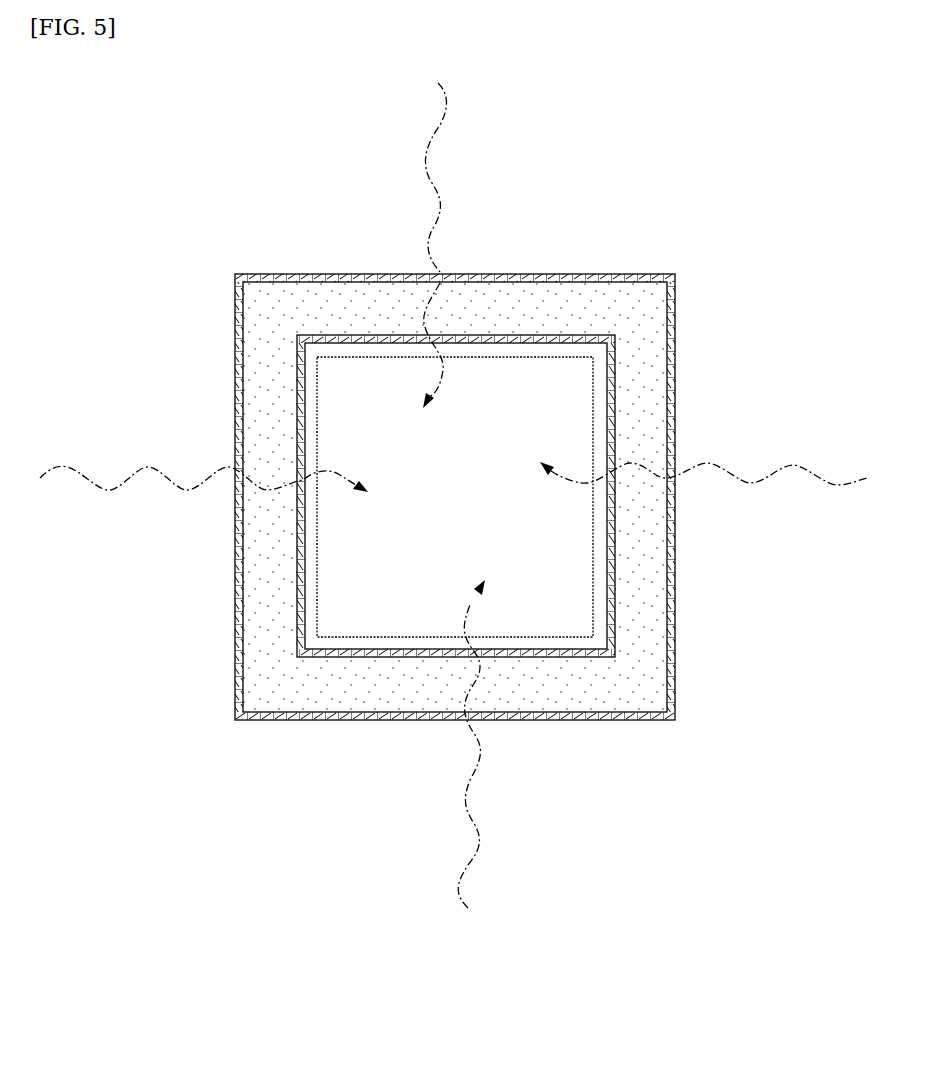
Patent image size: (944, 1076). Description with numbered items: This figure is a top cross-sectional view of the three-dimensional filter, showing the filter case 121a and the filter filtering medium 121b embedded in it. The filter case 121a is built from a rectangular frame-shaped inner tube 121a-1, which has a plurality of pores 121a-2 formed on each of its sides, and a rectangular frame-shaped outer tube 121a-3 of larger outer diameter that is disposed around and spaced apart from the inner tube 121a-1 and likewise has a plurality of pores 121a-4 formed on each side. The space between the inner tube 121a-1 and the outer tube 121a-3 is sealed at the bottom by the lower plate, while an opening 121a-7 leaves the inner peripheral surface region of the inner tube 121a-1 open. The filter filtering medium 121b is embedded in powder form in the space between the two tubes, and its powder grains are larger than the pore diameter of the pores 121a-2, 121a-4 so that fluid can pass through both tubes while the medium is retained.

The filter case 121a is at (278, 240).
The inner tube 121a-1 is at (676, 352).
The pores 121a-2 is at (676, 335).
The outer tube 121a-3 is at (598, 273).
The pores 121a-4 is at (545, 275).
The opening 121a-7 is at (318, 543).
The filter filtering medium 121b is at (573, 697).